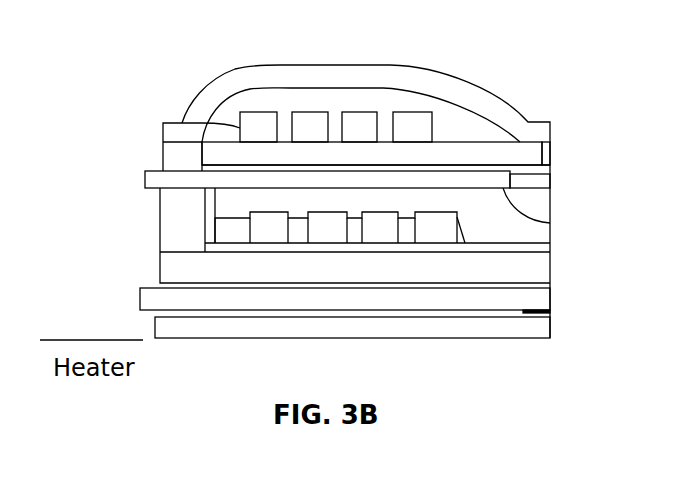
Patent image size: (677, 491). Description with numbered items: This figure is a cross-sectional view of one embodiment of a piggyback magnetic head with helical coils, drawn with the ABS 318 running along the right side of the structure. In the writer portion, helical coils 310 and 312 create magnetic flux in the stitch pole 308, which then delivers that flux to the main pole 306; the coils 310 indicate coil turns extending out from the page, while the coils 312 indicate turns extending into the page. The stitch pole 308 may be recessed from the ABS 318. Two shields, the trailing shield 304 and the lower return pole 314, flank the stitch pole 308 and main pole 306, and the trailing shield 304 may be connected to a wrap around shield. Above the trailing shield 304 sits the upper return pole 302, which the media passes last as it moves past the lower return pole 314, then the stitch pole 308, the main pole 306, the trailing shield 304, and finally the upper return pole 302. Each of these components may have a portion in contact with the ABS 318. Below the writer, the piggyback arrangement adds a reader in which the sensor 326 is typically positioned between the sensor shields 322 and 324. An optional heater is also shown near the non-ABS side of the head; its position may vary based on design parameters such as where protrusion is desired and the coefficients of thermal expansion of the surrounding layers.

The upper return pole 302 is at (488, 95).
The trailing shield 304 is at (552, 152).
The main pole 306 is at (552, 178).
The stitch pole 308 is at (552, 225).
The helical coils 310 is at (182, 123).
The helical coils 312 is at (250, 212).
The lower return pole (shield) 314 is at (392, 276).
The ABS 318 is at (551, 257).
The sensor shield 322 is at (140, 300).
The sensor shield 324 is at (153, 327).
The sensor 326 is at (545, 311).